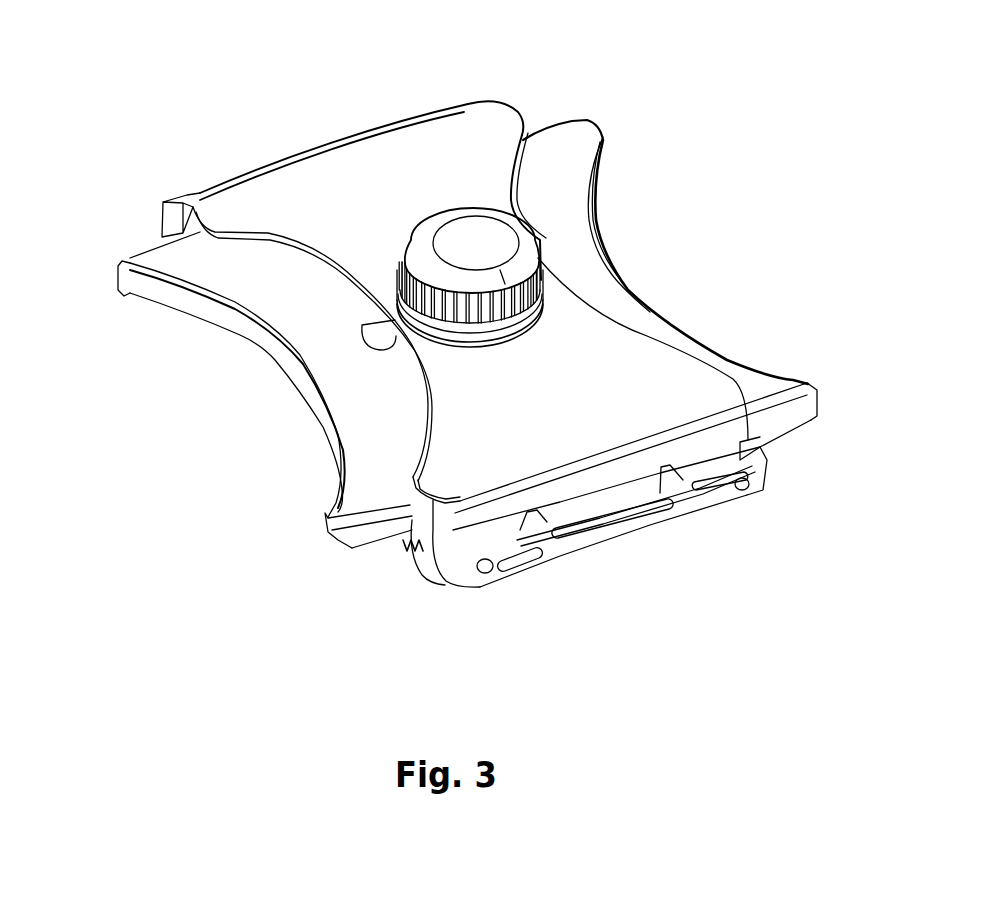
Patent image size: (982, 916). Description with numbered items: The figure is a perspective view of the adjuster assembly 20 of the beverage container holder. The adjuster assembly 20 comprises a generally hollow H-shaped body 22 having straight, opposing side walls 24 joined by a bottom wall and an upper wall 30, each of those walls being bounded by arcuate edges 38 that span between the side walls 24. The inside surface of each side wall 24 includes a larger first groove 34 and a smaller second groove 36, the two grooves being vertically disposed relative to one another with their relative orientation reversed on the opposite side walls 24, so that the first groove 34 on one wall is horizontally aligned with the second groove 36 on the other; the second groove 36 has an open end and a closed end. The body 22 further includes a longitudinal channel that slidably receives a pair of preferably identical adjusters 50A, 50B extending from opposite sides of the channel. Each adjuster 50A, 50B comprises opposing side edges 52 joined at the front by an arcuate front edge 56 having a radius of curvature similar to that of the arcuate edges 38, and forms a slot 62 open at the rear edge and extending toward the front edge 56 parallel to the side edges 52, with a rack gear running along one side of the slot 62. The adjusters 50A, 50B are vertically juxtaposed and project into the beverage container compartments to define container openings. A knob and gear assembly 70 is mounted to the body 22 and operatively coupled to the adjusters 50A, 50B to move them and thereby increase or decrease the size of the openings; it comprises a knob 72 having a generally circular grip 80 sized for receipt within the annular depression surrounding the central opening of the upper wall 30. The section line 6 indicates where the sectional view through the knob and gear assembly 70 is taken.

The adjuster assembly 20 is at (292, 82).
The body 22 is at (497, 100).
The side walls 24 is at (498, 503).
The upper wall 30 is at (630, 398).
The first groove 34 is at (430, 510).
The second groove 36 is at (407, 552).
The arcuate edges 38 is at (423, 383).
The adjuster 50A is at (125, 242).
The adjuster 50B is at (572, 122).
The side edges 52 is at (546, 127).
The front edge 56 is at (165, 301).
The slot 62 is at (377, 353).
The knob and gear assembly 70 is at (417, 183).
The knob 72 is at (448, 208).
The grip 80 is at (432, 248).
The section line 6- 6 is at (277, 397).